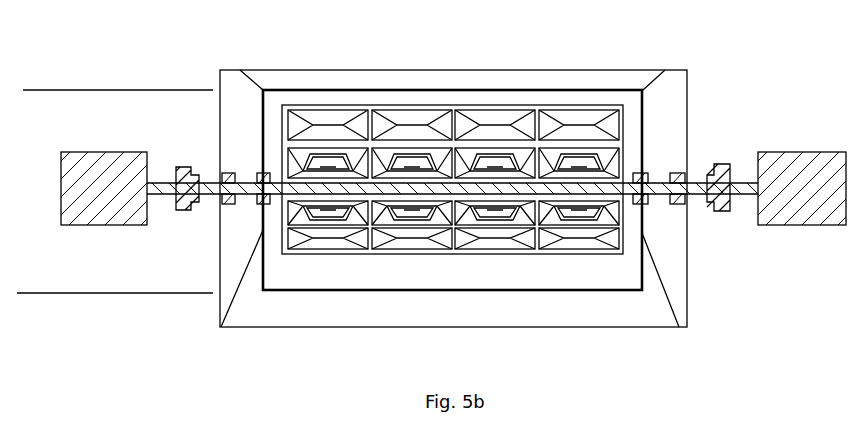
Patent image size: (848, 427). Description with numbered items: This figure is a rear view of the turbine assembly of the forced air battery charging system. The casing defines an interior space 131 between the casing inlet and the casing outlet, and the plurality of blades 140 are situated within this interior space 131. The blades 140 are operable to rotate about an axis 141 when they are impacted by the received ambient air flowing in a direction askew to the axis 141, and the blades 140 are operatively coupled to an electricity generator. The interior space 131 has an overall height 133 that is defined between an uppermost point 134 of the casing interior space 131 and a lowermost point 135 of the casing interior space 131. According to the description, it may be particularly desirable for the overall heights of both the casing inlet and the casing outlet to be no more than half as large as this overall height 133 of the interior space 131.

The casing interior space 131 is at (581, 268).
The overall height of the casing interior space 133 is at (33, 287).
The uppermost point of the casing interior space 134 is at (342, 90).
The lowermost point of the casing interior space 135 is at (304, 290).
The blades 140 is at (577, 102).
The axis 141 is at (698, 197).